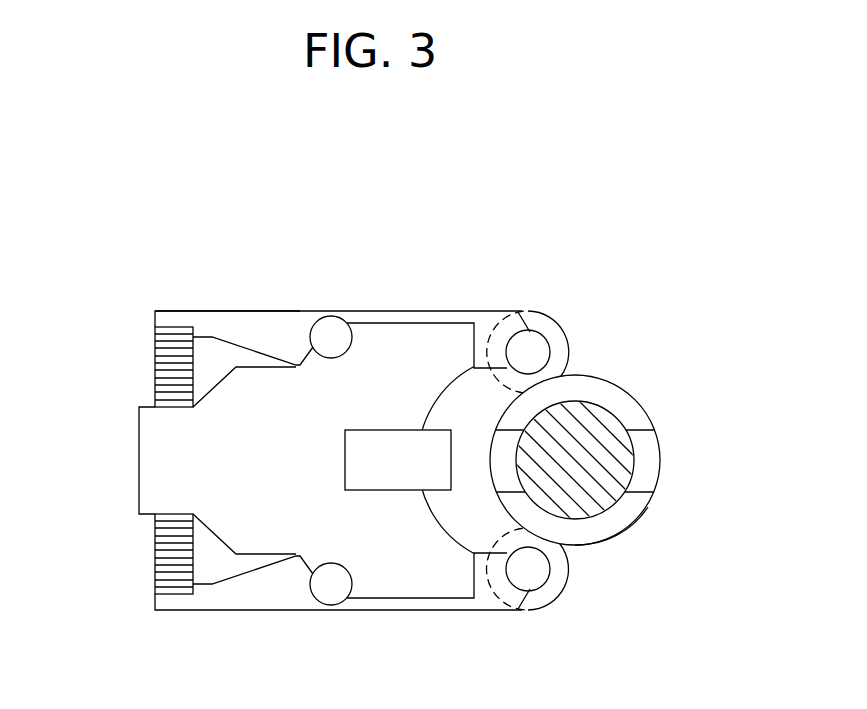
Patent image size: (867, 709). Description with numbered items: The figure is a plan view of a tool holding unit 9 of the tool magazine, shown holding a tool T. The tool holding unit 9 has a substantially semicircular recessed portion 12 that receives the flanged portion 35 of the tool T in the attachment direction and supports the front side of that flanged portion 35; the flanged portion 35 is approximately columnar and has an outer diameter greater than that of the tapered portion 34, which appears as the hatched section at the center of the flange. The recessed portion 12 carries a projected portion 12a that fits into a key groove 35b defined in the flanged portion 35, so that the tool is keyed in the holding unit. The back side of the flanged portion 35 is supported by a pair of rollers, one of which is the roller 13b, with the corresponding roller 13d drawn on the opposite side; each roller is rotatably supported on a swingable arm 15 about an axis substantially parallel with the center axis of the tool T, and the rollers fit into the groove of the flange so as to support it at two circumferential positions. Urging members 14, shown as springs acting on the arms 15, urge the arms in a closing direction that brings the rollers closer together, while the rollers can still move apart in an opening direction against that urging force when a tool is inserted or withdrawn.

The tool holding unit 9 is at (186, 300).
The recessed portion 12 is at (447, 399).
The projected portion 12a is at (452, 449).
The roller 13b is at (550, 317).
The lower roller 13d is at (557, 598).
The urging member 14 is at (153, 345).
The arm 15 is at (477, 310).
The tapered portion 34 is at (605, 406).
The flanged portion 35 is at (597, 377).
The key groove 35b is at (503, 470).
The tool T is at (648, 507).